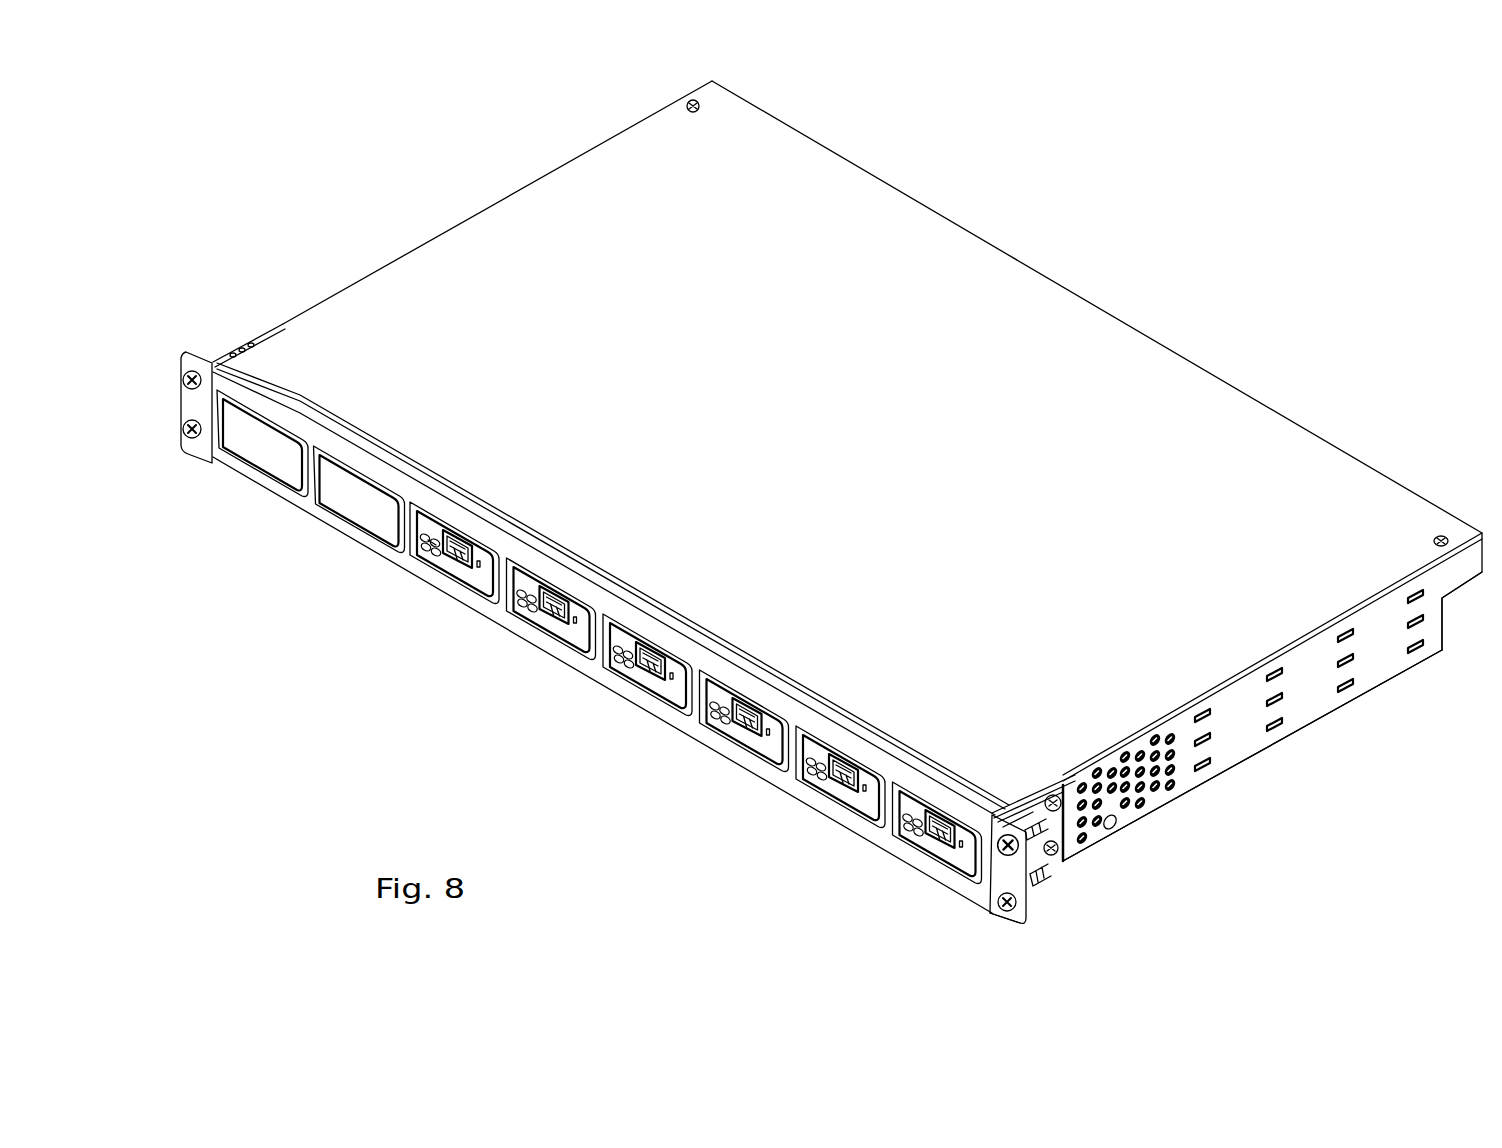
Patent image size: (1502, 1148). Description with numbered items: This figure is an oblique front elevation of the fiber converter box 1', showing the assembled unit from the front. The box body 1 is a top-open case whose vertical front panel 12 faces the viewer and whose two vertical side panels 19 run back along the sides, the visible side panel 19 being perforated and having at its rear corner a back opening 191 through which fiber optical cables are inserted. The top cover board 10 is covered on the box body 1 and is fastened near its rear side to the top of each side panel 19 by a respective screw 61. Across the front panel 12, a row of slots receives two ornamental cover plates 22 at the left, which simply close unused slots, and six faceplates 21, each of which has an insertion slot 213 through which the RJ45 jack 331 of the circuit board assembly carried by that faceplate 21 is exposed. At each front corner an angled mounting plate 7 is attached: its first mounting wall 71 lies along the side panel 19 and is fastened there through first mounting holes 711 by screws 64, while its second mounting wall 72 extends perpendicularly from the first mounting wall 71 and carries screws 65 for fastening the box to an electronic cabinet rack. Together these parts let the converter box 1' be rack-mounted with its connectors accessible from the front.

The box body 1 is at (849, 474).
The fiber converter box 1' is at (1193, 289).
The top cover board 10 is at (1025, 276).
The vertical front panel 12 is at (690, 725).
The vertical side panel 19 is at (1383, 655).
The back opening 191 is at (1455, 598).
The faceplate 21 is at (482, 573).
The insertion slot 213 is at (430, 542).
The ornamental cover plate 22 is at (268, 460).
The RJ45 jack 331 is at (452, 550).
The screw 61 is at (687, 104).
The screw 64 is at (1053, 795).
The screw 65 is at (191, 371).
The angled mounting plate 7 is at (214, 362).
The first mounting wall 71 is at (262, 340).
The first mounting hole 711 is at (1028, 815).
The second mounting wall 72 is at (1008, 918).